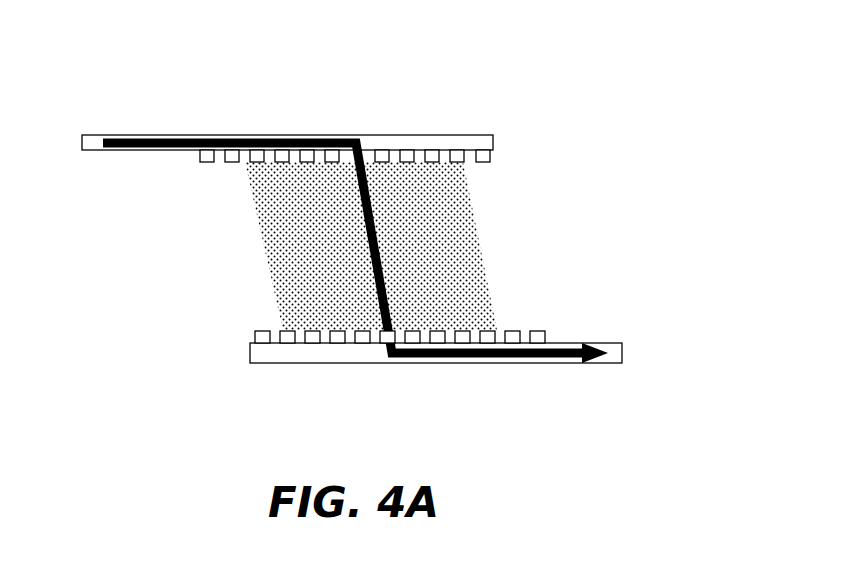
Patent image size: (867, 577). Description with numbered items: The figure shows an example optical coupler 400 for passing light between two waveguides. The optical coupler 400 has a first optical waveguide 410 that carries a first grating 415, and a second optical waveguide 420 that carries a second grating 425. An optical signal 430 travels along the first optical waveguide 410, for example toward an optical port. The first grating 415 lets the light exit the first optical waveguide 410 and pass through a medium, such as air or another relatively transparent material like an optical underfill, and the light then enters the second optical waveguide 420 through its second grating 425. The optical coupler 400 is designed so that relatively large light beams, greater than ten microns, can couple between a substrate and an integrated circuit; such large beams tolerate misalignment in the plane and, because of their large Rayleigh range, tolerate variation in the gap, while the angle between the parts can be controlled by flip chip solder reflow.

The optical coupler 400 is at (180, 60).
The first optical waveguide 410 is at (494, 145).
The first grating 415 is at (481, 163).
The second optical waveguide 420 is at (622, 352).
The second grating 425 is at (545, 335).
The optical signal 430 is at (387, 288).